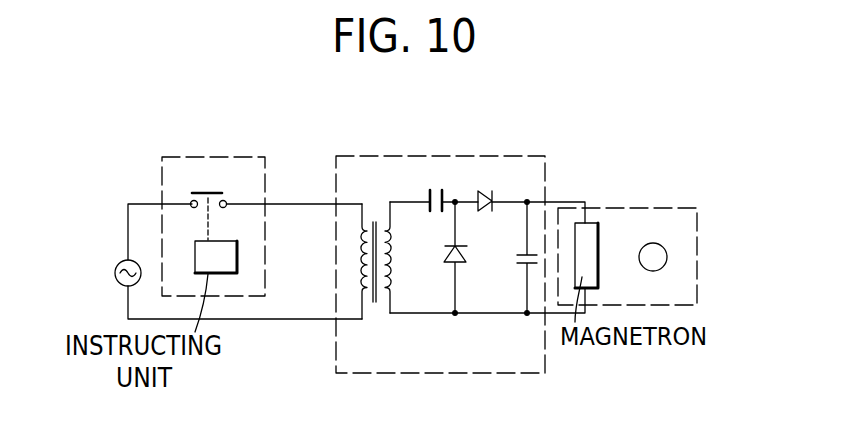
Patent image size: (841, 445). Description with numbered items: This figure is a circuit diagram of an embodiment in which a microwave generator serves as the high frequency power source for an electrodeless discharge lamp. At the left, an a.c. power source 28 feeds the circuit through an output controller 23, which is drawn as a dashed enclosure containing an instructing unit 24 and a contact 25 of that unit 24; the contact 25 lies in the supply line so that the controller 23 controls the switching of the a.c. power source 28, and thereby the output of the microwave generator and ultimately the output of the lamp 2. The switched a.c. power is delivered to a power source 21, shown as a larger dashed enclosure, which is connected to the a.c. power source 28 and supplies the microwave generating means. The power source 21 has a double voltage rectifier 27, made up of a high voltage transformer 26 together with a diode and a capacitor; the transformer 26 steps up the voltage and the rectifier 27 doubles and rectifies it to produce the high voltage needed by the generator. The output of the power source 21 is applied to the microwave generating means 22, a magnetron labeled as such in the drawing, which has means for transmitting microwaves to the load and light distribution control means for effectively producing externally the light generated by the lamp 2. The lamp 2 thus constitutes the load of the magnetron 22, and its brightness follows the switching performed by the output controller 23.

The lamp 2 is at (650, 272).
The power source 21 is at (422, 264).
The microwave generating means 22 is at (598, 230).
The output controller 23 is at (195, 218).
The instructing unit 24 is at (237, 247).
The contact 25 is at (203, 192).
The high voltage transformer 26 is at (377, 303).
The double voltage rectifier 27 is at (490, 295).
The a.c. power source 28 is at (114, 273).